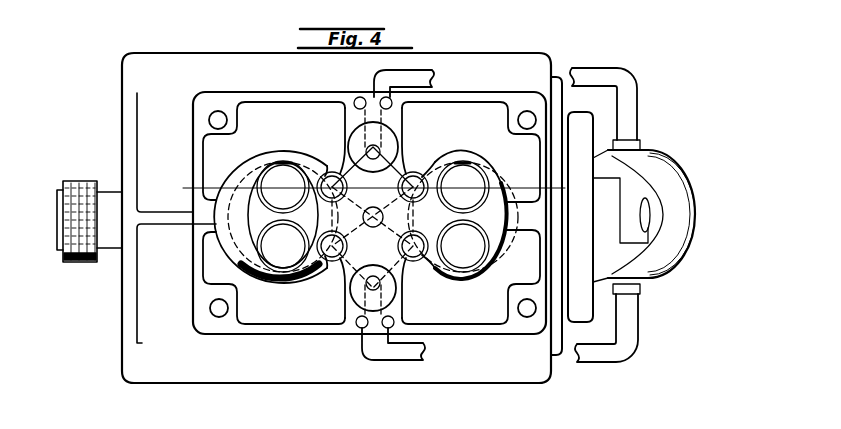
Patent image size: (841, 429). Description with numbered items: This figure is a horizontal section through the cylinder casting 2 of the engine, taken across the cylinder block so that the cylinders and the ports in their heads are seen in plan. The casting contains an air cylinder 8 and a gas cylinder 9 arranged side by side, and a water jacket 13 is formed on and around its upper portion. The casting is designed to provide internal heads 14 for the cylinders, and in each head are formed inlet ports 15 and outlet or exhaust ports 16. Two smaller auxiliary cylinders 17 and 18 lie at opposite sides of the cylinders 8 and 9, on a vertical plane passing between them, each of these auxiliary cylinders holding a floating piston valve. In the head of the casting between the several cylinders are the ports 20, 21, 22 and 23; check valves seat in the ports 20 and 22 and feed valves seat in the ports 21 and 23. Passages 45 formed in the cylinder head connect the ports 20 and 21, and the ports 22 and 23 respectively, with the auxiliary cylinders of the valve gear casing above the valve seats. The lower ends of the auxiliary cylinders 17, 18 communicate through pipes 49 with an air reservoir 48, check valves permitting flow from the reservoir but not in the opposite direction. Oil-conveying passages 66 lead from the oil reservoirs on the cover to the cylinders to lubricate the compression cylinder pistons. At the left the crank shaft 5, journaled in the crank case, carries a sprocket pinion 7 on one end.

The cylinder casting 2 is at (553, 267).
The crank shaft 5 is at (376, 186).
The sprocket pinion 7 is at (70, 262).
The air cylinder 8 is at (238, 250).
The gas cylinder 9 is at (494, 183).
The water jacket 13 is at (467, 318).
The internal heads 14 is at (193, 224).
The inlet ports 15 is at (270, 178).
The outlet or exhaust ports 16 is at (277, 258).
The auxiliary cylinder 17 is at (390, 134).
The auxiliary cylinder 18 is at (366, 292).
The port 20 is at (416, 178).
The port 21 is at (332, 178).
The port 22 is at (338, 242).
The port 23 is at (412, 255).
The passages 45 is at (347, 130).
The air reservoir 48 is at (707, 167).
The pipes 49 is at (628, 99).
The oil-conveying passages 66 is at (352, 43).